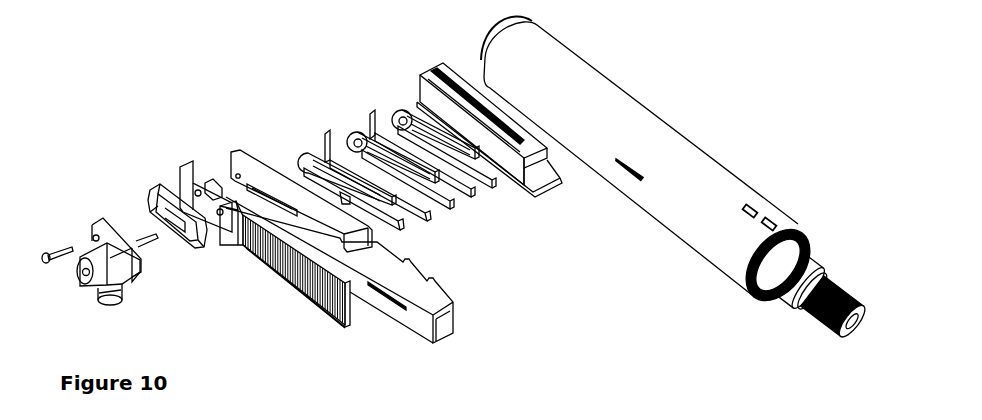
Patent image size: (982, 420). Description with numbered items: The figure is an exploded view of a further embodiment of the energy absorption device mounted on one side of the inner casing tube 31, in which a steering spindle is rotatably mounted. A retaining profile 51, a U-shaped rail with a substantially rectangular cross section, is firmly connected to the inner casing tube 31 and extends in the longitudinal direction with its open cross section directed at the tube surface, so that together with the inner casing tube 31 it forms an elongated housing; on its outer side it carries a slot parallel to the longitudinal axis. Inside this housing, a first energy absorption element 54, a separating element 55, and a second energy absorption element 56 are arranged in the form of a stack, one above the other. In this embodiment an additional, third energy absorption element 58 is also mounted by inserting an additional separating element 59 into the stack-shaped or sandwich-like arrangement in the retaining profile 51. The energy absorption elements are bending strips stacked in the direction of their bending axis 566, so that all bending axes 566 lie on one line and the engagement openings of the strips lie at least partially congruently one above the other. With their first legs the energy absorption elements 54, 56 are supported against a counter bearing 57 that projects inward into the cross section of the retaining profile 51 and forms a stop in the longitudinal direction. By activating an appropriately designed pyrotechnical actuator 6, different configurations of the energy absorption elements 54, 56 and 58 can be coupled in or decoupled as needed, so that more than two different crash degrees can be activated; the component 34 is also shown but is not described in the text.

The pyrotechnical actuator 6 is at (110, 252).
The inner casing tube 31 is at (678, 157).
The heat sink 34 is at (308, 300).
The retaining profile 51 is at (430, 297).
The first energy absorption element 54 is at (352, 131).
The separating element 55 is at (327, 133).
The second energy absorption element 56 is at (296, 156).
The counter bearing 57 is at (535, 180).
The additional energy absorption element 58 is at (399, 110).
The additional separating element 59 is at (373, 112).
The bending axis 566 is at (298, 172).